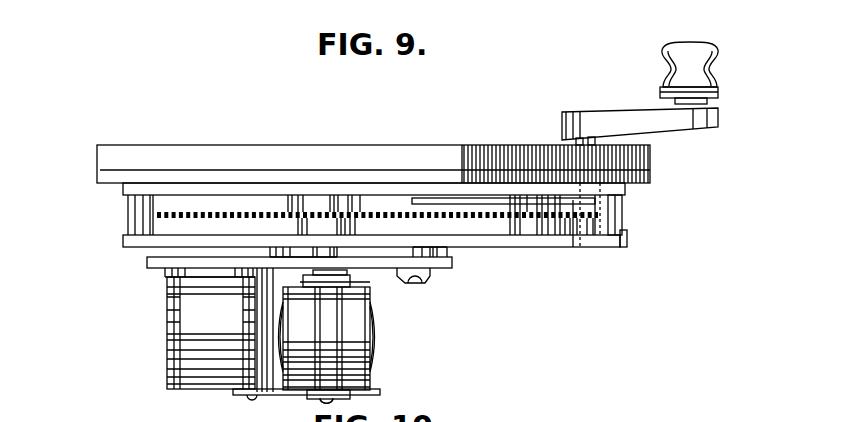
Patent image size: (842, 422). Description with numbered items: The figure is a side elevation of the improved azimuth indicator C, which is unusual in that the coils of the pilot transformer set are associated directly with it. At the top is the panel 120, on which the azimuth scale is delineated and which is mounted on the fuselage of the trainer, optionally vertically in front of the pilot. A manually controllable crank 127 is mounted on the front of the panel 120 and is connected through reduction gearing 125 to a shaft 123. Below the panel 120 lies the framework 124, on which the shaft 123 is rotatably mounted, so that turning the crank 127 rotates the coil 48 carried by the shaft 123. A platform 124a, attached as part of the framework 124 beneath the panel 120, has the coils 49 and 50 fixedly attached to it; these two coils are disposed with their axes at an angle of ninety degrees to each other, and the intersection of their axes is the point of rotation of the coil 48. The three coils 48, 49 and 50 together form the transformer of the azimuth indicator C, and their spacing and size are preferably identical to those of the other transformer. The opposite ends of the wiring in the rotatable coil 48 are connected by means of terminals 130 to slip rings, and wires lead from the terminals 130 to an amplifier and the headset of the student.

The panel 120 is at (117, 152).
The manually controllable crank 127 is at (683, 128).
The azimuth indicator C is at (624, 212).
The reduction gearing 125 is at (573, 247).
The framework 124 is at (533, 235).
The platform 124a is at (157, 263).
The terminals 130 is at (418, 292).
The shaft 123 is at (335, 250).
The coil 49 is at (377, 333).
The coil 48 is at (380, 344).
The coil 50 is at (204, 372).